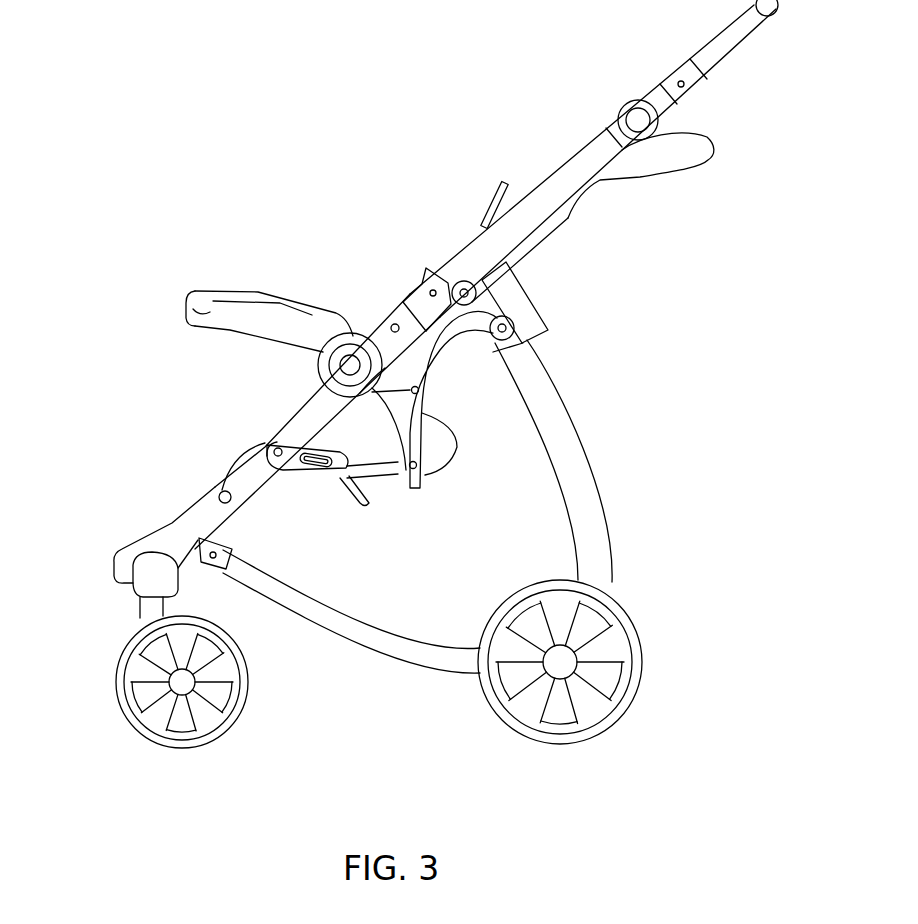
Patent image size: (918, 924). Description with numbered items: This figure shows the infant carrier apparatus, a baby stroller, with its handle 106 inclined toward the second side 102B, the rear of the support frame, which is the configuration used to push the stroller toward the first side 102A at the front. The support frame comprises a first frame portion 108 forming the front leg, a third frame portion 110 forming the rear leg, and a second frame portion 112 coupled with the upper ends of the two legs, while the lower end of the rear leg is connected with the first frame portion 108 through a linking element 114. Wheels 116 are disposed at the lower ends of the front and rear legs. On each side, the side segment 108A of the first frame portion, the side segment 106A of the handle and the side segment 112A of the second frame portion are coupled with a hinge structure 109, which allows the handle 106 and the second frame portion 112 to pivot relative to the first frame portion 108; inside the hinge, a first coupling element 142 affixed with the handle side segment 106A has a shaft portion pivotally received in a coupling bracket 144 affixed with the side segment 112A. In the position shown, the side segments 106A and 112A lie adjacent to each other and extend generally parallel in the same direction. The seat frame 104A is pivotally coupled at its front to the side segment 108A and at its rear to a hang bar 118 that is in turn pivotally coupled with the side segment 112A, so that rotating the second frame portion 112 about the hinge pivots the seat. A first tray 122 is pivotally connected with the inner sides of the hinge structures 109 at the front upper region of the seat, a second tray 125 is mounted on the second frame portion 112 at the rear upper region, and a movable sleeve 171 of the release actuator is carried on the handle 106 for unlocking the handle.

The first side 102A is at (155, 405).
The second side 102B is at (715, 468).
The seat frame 104A is at (372, 478).
The handle 106 is at (566, 148).
The side segment of the handle 106A is at (440, 284).
The first frame portion 108 is at (208, 497).
The side segment of the first frame portion 108A is at (305, 427).
The hinge structure 109 is at (344, 326).
The third frame portion 110 is at (605, 537).
The second frame portion 112 is at (538, 240).
The side segment of the second frame portion 112A is at (488, 277).
The linking element 114 is at (357, 637).
The wheel 116 is at (230, 730).
The hang bar 118 is at (465, 357).
The first tray 122 is at (192, 312).
The second tray 125 is at (692, 143).
The first coupling element 142 is at (325, 388).
The coupling bracket 144 is at (517, 328).
The movable sleeve 171 is at (410, 298).